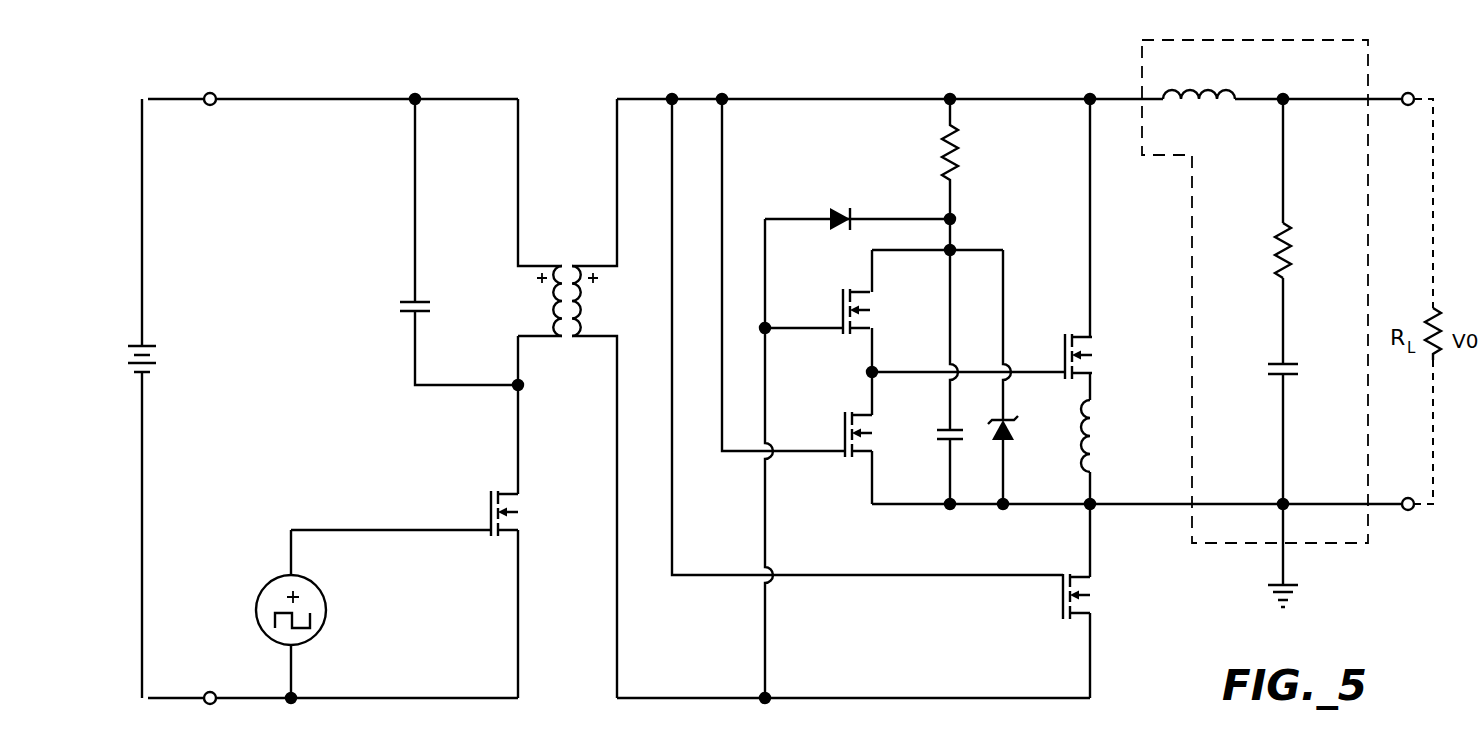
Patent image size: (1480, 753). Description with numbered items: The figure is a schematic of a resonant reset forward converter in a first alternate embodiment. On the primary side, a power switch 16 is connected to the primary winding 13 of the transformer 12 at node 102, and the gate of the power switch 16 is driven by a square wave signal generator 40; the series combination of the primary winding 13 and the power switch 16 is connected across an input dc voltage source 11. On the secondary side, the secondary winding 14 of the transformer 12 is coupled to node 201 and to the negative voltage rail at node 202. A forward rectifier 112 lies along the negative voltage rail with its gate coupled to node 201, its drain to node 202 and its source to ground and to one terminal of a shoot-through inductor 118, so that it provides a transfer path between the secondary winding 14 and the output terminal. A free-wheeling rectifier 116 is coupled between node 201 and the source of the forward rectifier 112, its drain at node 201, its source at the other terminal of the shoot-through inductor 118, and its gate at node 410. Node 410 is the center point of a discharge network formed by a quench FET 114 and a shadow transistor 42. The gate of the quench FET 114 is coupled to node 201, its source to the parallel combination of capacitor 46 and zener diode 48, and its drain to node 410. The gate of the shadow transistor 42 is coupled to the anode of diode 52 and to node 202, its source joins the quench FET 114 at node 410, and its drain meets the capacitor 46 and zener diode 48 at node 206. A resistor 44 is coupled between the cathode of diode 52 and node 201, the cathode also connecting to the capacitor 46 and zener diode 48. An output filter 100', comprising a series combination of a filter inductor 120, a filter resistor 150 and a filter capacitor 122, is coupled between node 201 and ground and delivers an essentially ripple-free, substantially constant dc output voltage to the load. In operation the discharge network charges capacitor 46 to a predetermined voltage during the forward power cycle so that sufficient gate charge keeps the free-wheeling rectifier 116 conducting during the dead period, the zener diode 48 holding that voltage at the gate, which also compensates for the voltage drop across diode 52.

The input dc voltage source 11 is at (150, 340).
The transformer 12 is at (568, 268).
The primary winding 13 is at (551, 302).
The secondary winding 14 is at (583, 303).
The power switch 16 is at (488, 511).
The square wave signal generator 40 is at (327, 612).
The shadow transistor 42 is at (872, 318).
The resistor 44 is at (958, 158).
The capacitor 46 is at (940, 444).
The zener diode 48 is at (1010, 417).
The diode 52 is at (852, 212).
The output filter 100' is at (1253, 311).
The node 102 is at (522, 388).
The forward rectifier 112 is at (1060, 598).
The quench FET 114 is at (843, 432).
The free-wheeling rectifier 116 is at (1062, 358).
The shoot-through inductor 118 is at (1093, 440).
The filter inductor 120 is at (1200, 104).
The filter capacitor 122 is at (1278, 378).
The filter resistor 150 is at (1290, 248).
The node 201 is at (675, 97).
The node 202 is at (762, 702).
The node 206 is at (952, 248).
The node 410 is at (870, 371).